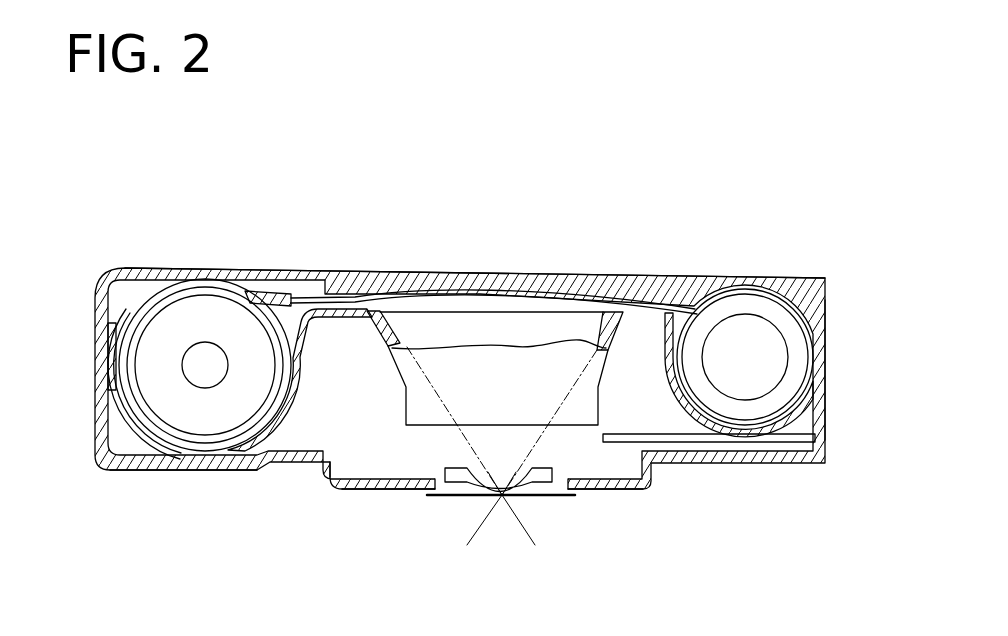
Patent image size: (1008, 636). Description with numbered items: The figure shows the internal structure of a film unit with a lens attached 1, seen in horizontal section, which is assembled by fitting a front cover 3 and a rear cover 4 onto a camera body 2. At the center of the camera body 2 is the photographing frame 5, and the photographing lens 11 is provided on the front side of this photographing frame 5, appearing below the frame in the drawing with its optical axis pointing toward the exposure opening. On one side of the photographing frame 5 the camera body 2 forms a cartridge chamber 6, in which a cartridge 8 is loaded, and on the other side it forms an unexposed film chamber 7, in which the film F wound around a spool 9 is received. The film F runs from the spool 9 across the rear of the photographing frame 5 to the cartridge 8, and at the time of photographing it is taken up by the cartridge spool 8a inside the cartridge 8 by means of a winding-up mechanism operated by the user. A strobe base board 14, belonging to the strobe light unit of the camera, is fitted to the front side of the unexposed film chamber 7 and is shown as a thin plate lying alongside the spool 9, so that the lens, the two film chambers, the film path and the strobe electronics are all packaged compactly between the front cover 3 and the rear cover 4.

The film unit with a lens attached 1 is at (507, 262).
The camera body 2 is at (395, 393).
The front cover 3 is at (598, 500).
The rear cover 4 is at (777, 278).
The photographing frame 5 is at (420, 413).
The cartridge chamber 6 is at (245, 452).
The unexposed film chamber 7 is at (816, 414).
The cartridge 8 is at (143, 298).
The cartridge spool 8a is at (205, 342).
The spool 9 is at (770, 352).
The photographing lens 11 is at (502, 498).
The strobe base board 14 is at (698, 442).
The film F is at (688, 303).